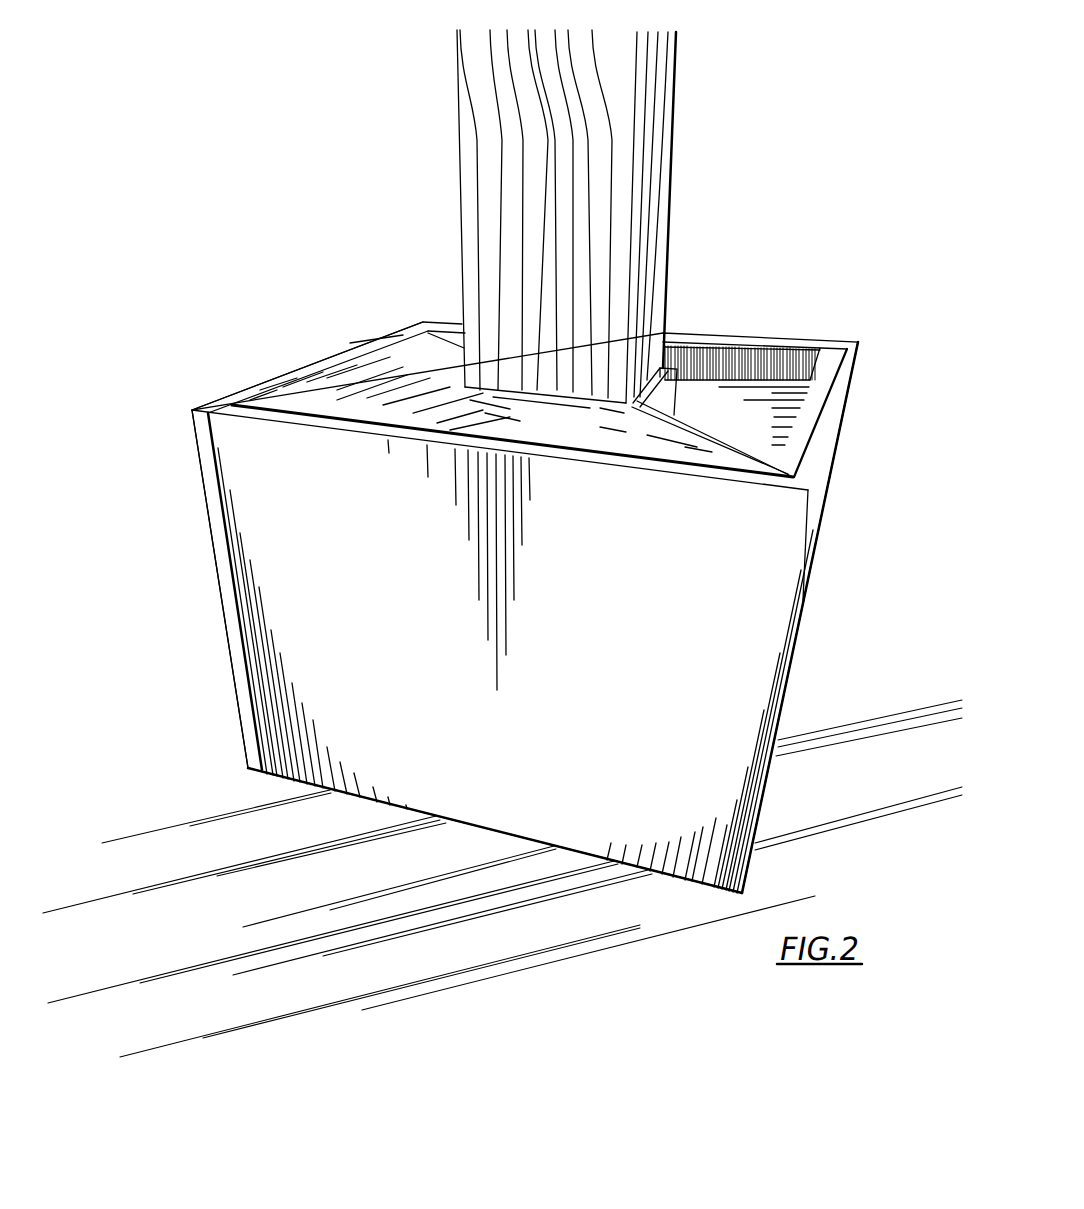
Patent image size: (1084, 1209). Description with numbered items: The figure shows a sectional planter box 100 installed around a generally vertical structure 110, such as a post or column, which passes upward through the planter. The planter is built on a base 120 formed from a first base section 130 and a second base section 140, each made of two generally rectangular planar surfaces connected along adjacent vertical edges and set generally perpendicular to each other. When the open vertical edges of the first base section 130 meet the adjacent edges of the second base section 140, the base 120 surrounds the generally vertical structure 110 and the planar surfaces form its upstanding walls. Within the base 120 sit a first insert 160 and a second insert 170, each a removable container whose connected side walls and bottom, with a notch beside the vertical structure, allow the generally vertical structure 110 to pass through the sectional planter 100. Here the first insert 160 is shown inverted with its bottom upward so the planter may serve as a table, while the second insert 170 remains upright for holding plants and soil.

The sectional planter box 100 is at (525, 559).
The generally vertical structure 110 is at (512, 216).
The base 120 is at (501, 399).
The first base section 130 is at (266, 609).
The second base section 140 is at (804, 617).
The first insert 160 is at (495, 385).
The second insert 170 is at (749, 376).